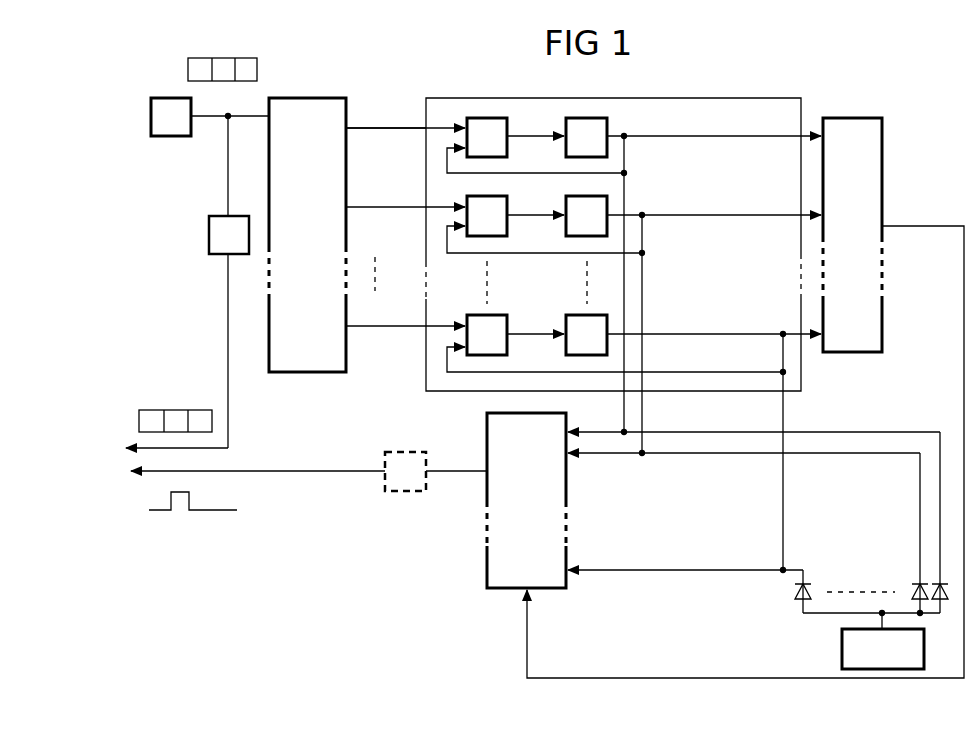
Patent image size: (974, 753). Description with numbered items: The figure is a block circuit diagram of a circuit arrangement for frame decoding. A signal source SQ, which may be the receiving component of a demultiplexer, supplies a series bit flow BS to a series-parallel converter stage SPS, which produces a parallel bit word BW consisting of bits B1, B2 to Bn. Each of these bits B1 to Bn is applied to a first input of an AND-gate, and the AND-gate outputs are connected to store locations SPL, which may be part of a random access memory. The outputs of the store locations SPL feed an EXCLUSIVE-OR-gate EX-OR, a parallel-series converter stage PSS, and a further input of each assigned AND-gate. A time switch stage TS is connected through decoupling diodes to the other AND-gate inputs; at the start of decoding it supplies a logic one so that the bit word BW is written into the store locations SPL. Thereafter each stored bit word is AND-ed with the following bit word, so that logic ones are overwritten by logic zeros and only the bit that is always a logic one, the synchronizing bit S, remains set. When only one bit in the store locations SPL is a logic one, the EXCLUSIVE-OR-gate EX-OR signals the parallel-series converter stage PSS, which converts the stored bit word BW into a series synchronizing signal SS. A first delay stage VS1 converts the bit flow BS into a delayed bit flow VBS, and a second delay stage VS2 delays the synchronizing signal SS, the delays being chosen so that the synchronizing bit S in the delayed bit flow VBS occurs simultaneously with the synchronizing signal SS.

The signal source SQ is at (118, 136).
The synchronizing bit S is at (222, 56).
The bit flow BS is at (230, 104).
The first delay stage VS1 is at (180, 262).
The delayed bit flow VBS is at (163, 417).
The synchronizing signal SS is at (178, 504).
The series-parallel converter stage SPS is at (316, 58).
The bit word BW is at (405, 106).
The bit B1 is at (386, 142).
The bit B2 is at (405, 221).
The bit Bn is at (405, 291).
The store locations SPL is at (600, 316).
The EXCLUSIVE-OR-gate EX-OR is at (745, 398).
The parallel-series converter stage PSS is at (428, 598).
The second delay stage VS2 is at (448, 515).
The time switch stage TS is at (810, 686).